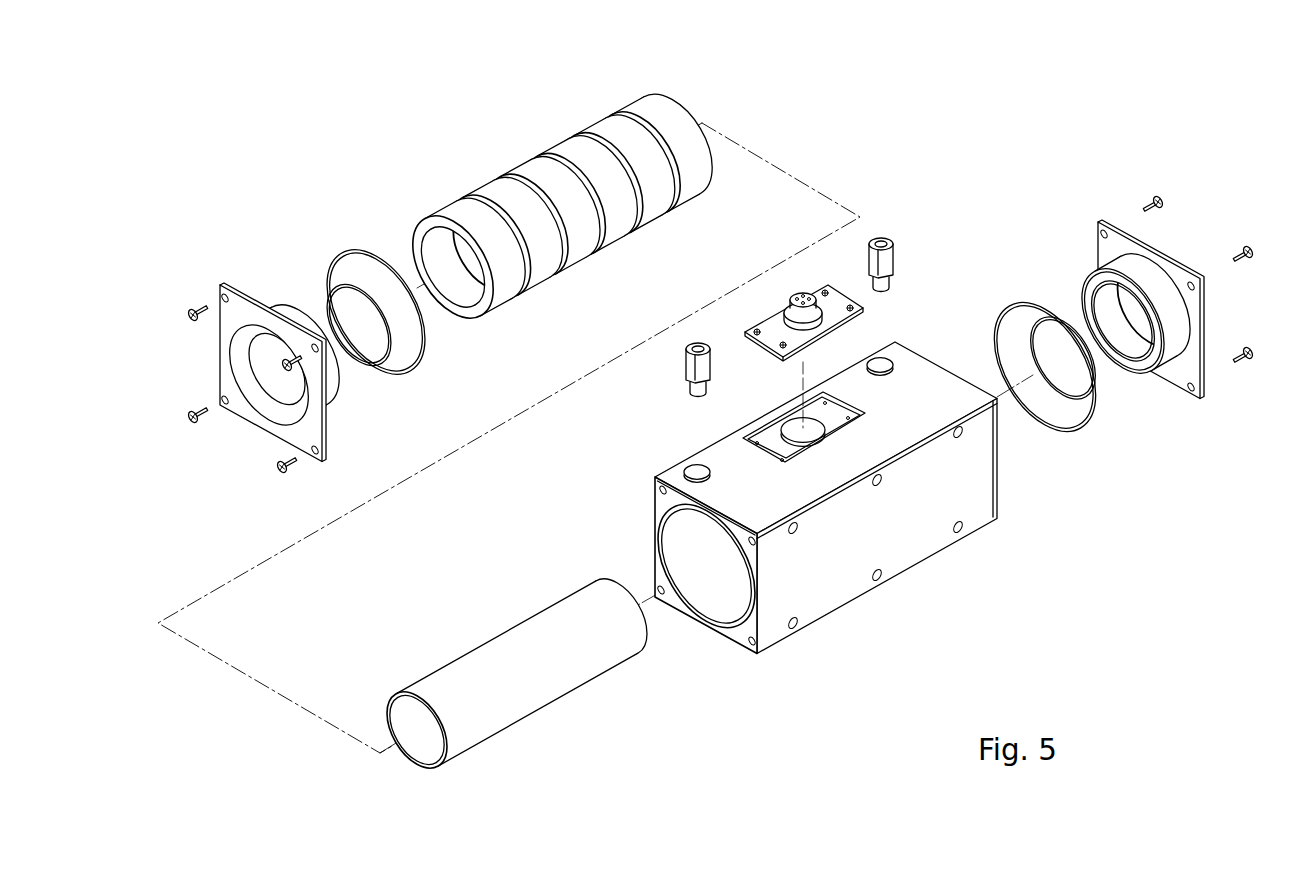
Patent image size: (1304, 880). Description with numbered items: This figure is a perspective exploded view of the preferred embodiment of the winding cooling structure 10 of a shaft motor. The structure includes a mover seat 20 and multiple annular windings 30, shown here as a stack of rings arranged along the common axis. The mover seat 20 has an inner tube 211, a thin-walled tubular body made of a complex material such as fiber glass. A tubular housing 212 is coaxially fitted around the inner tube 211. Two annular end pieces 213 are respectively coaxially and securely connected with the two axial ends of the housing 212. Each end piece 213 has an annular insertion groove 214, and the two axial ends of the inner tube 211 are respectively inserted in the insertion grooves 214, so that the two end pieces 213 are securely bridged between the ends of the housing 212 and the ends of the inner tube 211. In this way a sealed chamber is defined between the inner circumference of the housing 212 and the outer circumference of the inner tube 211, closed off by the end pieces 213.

The winding cooling structure 10 is at (716, 406).
The mover seat 20 is at (859, 468).
The annular windings 30 is at (450, 213).
The inner tube 211 is at (497, 638).
The housing 212 is at (843, 588).
The end pieces 213 is at (268, 432).
The insertion groove 214 is at (1142, 364).